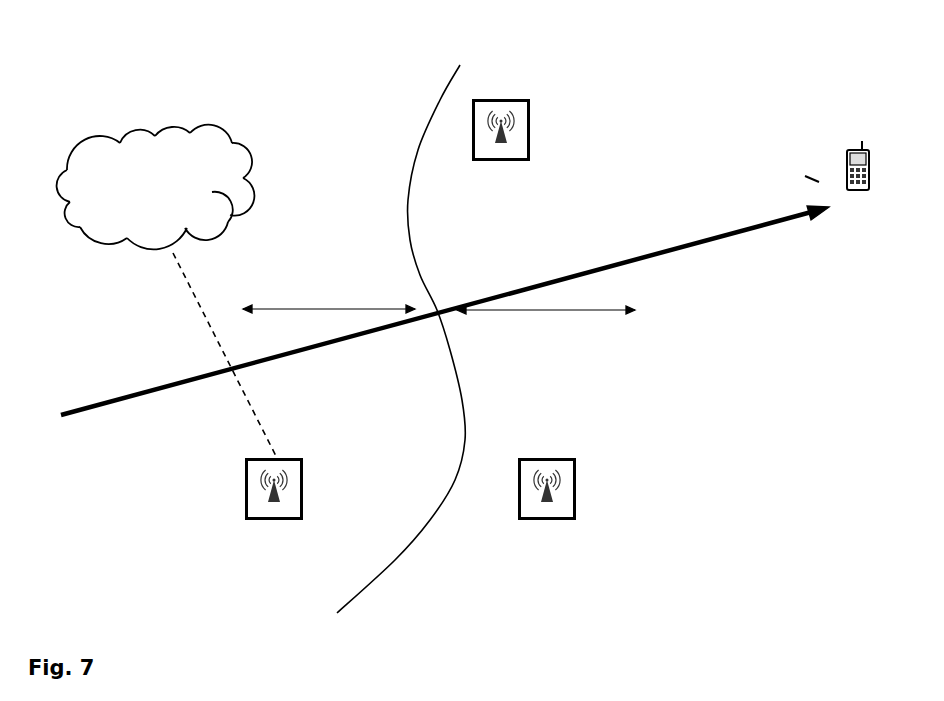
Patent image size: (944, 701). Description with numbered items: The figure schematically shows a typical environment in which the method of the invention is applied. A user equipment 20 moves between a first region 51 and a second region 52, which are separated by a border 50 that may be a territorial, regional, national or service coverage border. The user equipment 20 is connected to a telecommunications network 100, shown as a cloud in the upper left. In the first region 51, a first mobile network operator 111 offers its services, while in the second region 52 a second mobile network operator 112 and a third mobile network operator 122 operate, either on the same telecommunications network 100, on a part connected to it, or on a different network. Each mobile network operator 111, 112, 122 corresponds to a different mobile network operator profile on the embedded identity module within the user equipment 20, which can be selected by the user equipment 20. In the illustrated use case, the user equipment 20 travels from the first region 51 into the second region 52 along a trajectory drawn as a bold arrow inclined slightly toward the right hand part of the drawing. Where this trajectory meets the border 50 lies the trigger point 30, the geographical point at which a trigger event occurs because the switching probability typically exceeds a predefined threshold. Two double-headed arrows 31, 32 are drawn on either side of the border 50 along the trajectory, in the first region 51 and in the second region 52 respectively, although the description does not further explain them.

The user equipment 20 is at (445, 299).
The trigger point 30 is at (444, 296).
The distance in first region 31 is at (329, 301).
The distance in second region 32 is at (546, 320).
The border 50 is at (401, 324).
The first region 51 is at (135, 53).
The second region 52 is at (760, 55).
The telecommunications network 100 is at (156, 187).
The first mobile network operator 111 is at (274, 509).
The second mobile network operator 112 is at (547, 509).
The third mobile network operator 122 is at (501, 150).